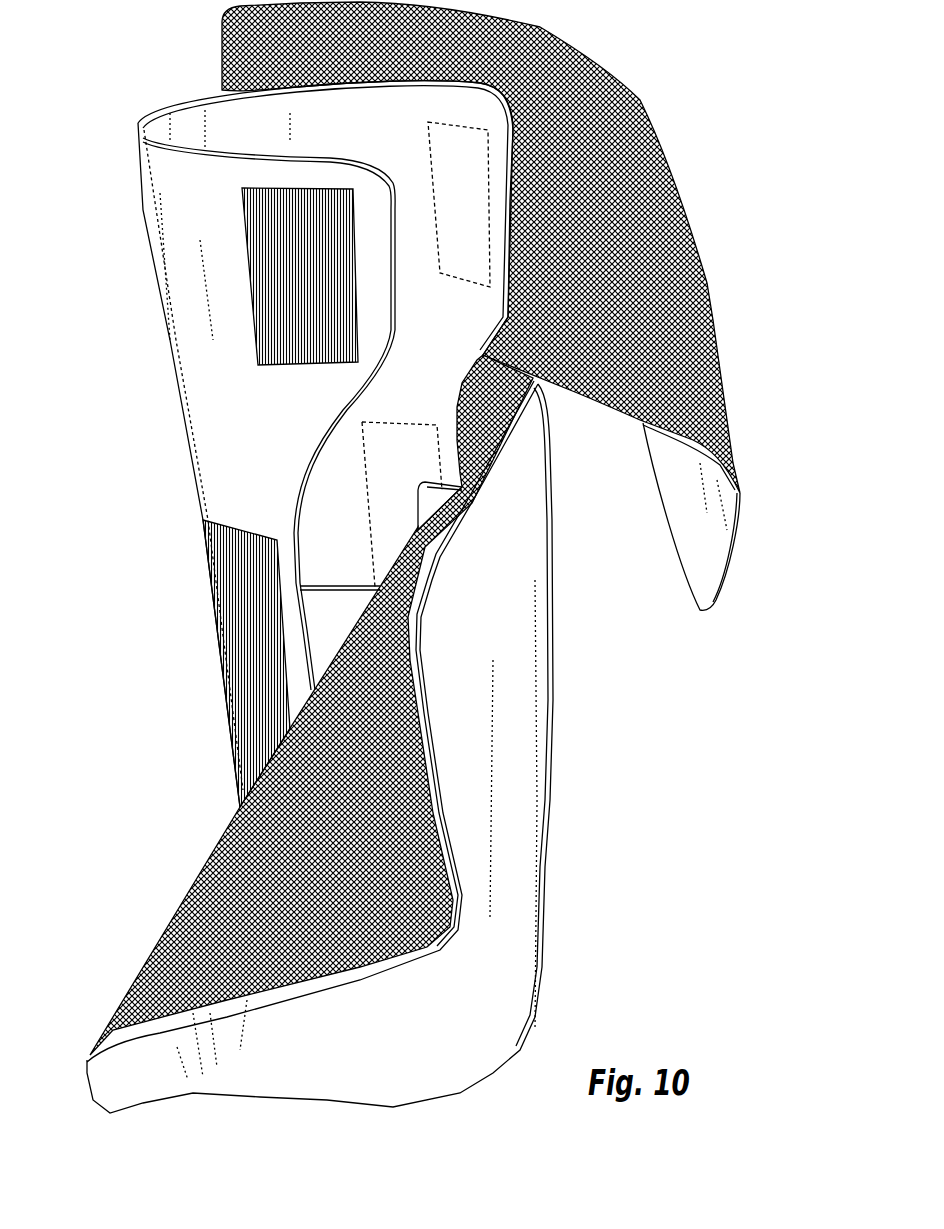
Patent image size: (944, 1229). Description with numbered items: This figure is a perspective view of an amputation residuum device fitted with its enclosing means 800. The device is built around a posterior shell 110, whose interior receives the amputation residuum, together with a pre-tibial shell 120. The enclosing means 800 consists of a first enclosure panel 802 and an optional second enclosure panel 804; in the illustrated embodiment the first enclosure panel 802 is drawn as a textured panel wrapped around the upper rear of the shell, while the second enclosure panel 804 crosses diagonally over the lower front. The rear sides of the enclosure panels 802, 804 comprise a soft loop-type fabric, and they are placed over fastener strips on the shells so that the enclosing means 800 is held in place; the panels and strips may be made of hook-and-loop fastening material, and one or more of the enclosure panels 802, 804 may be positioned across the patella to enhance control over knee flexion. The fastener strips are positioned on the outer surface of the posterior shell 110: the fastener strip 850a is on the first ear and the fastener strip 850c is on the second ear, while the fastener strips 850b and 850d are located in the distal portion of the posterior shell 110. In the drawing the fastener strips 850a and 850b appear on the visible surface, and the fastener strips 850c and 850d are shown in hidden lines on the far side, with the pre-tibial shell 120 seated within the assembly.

The posterior shell 110 is at (158, 177).
The pre-tibial shell 120 is at (333, 600).
The enclosing means 800 is at (619, 717).
The first enclosure panel 802 is at (663, 180).
The second enclosure panel 804 is at (163, 957).
The fastener strip 850a is at (260, 248).
The fastener strip 850b is at (223, 627).
The fastener strip 850c is at (447, 168).
The fastener strip 850d is at (397, 457).